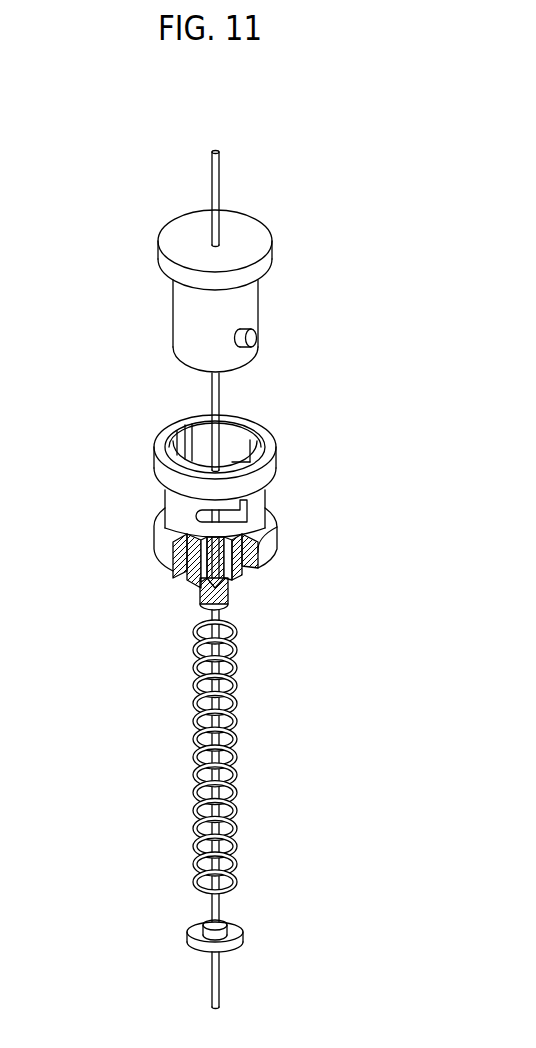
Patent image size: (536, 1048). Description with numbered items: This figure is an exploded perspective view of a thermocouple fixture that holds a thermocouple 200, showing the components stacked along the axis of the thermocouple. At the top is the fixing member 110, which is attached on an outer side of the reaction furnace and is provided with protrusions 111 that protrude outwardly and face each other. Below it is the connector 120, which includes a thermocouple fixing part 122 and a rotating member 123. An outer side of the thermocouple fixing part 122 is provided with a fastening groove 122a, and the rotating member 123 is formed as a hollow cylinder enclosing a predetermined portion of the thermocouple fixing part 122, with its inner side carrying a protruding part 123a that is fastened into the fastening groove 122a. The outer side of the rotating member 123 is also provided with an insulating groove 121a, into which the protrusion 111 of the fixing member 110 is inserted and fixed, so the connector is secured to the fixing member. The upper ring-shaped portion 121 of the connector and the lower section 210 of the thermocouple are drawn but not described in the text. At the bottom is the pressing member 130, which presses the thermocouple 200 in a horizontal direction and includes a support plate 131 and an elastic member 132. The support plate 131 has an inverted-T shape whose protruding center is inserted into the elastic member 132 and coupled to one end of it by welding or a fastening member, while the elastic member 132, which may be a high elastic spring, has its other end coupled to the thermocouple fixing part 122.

The thermocouple 200 is at (220, 151).
The fixing member 110 is at (205, 295).
The protrusion 111 is at (257, 340).
The connector 120 is at (194, 519).
The ring cap 121 is at (272, 463).
The insulating groove 121a is at (248, 502).
The thermocouple fixing part 122 is at (260, 565).
The fastening groove 122a is at (266, 558).
The rotating member 123 is at (157, 548).
The protruding part 123a is at (186, 578).
The pressing member 130 is at (195, 809).
The elastic member 132 is at (237, 790).
The lower rod 210 is at (222, 903).
The support plate 131 is at (232, 935).